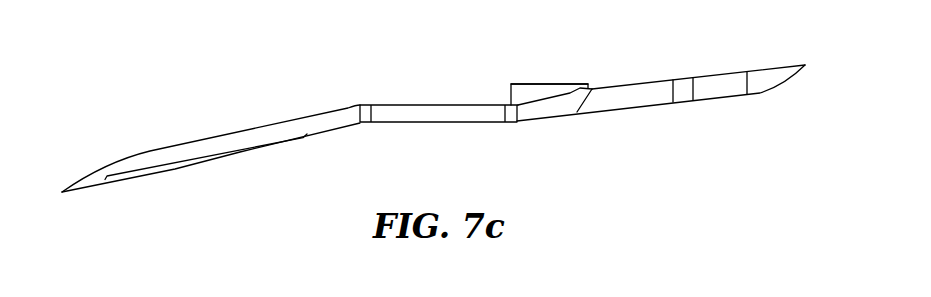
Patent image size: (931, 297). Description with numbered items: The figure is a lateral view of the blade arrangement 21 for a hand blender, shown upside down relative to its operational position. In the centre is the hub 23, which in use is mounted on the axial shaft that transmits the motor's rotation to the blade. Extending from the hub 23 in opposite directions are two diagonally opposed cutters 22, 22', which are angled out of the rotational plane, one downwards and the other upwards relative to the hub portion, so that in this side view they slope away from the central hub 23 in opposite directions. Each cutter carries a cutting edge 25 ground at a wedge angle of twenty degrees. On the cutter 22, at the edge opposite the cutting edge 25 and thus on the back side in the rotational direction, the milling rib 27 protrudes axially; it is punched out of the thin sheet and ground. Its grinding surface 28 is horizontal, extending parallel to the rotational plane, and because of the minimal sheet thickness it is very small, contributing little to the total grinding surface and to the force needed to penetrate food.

The blade arrangement 21 is at (433, 121).
The cutter 22 is at (661, 103).
The cutter 22' is at (211, 169).
The hub 23 is at (394, 115).
The cutting edge 25 is at (673, 102).
The milling rib 27 is at (537, 57).
The grinding surface 28 is at (558, 83).